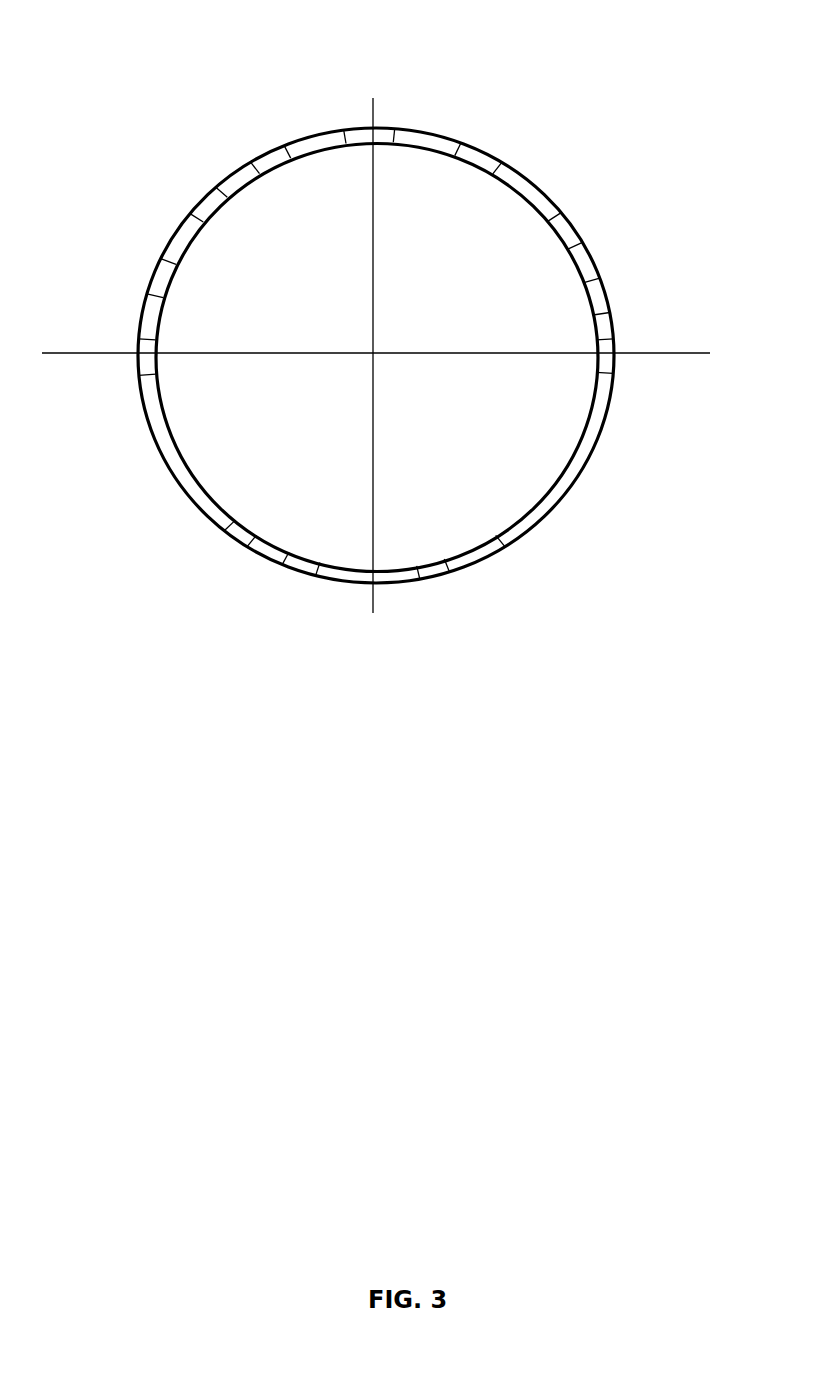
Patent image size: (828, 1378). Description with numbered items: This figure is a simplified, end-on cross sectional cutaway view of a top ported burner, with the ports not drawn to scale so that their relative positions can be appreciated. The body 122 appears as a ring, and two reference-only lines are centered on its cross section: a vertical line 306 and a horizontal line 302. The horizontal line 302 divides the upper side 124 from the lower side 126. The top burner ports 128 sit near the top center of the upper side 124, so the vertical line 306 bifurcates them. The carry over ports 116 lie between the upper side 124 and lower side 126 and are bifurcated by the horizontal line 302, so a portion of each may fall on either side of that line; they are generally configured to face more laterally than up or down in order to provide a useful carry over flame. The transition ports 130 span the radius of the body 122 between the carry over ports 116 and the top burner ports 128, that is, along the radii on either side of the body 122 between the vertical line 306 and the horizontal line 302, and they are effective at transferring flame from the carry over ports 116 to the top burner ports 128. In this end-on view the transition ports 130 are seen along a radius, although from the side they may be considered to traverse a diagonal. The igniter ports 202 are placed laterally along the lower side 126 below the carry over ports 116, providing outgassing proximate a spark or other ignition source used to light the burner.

The carry over ports 116 is at (155, 365).
The body 122 is at (518, 182).
The upper side 124 is at (233, 167).
The lower side 126 is at (190, 485).
The top burner ports 128 is at (378, 127).
The transition ports 130 is at (222, 213).
The igniter ports 202 is at (438, 577).
The horizontal line 302 is at (83, 353).
The vertical line 306 is at (376, 395).